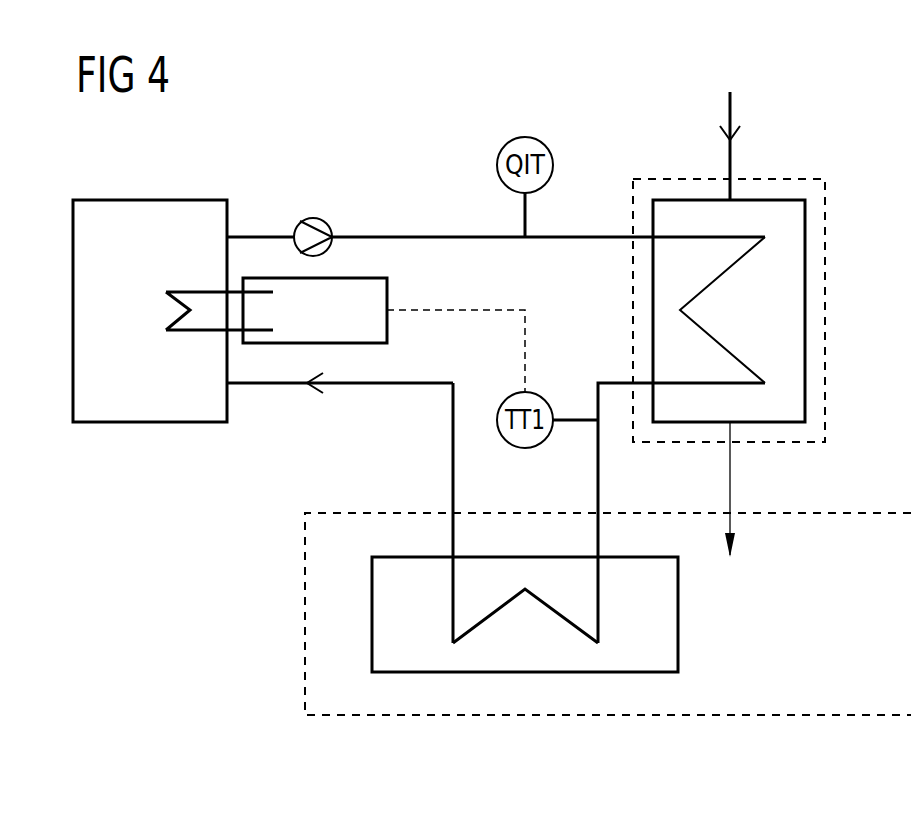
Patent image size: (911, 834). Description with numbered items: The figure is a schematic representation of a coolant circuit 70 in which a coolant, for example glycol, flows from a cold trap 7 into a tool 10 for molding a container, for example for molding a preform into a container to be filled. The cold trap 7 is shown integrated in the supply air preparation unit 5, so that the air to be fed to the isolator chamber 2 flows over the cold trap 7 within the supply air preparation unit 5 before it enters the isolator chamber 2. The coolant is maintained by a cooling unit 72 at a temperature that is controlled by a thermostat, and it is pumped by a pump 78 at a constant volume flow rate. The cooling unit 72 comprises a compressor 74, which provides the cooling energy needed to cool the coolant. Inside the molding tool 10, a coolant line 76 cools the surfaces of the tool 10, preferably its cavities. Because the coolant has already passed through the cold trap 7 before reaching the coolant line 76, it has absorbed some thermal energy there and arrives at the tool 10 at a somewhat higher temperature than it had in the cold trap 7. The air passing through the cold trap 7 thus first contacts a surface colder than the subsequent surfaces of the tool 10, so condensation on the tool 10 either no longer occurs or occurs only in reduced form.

The isolator chamber 2 is at (790, 705).
The supply air preparation unit 5 is at (818, 370).
The cold trap 7 is at (797, 247).
The tool 10 is at (525, 658).
The coolant circuit 70 is at (582, 235).
The cooling unit 72 is at (153, 407).
The compressor 74 is at (387, 293).
The coolant line 76 is at (453, 607).
The pump 78 is at (313, 219).